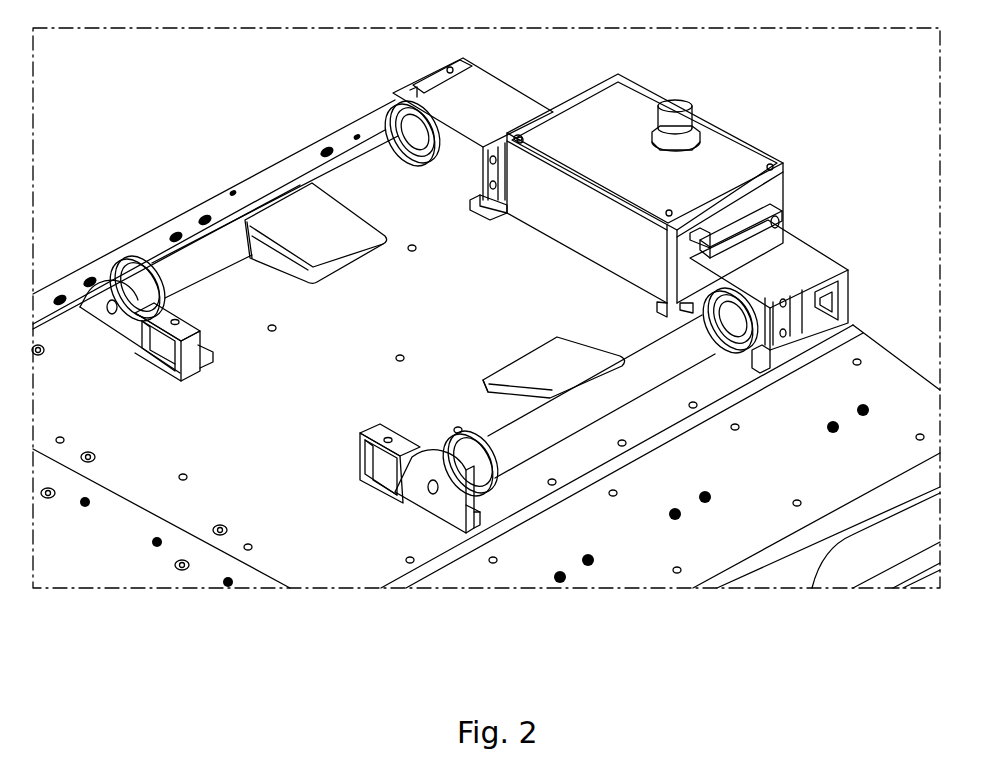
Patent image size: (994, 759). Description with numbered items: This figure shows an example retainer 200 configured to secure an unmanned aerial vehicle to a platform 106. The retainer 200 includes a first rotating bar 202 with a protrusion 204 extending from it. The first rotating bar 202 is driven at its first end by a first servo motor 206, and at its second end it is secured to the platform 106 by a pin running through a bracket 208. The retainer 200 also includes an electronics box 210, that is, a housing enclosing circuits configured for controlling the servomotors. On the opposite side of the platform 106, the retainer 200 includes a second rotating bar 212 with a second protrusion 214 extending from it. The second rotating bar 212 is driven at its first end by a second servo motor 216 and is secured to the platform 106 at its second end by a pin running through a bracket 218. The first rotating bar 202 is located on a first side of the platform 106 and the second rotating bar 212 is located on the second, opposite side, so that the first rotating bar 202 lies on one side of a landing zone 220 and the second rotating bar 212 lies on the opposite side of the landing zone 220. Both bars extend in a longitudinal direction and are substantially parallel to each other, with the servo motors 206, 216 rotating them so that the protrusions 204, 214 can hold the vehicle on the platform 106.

The retainer 200 is at (815, 84).
The platform 106 is at (292, 494).
The first rotating bar 202 is at (487, 436).
The protrusion 204 is at (582, 379).
The first servo motor 206 is at (786, 276).
The bracket 208 is at (400, 498).
The electronics box 210 is at (643, 139).
The second rotating bar 212 is at (185, 260).
The second protrusion 214 is at (340, 239).
The second servo motor 216 is at (512, 118).
The bracket 218 is at (122, 343).
The landing zone 220 is at (468, 306).